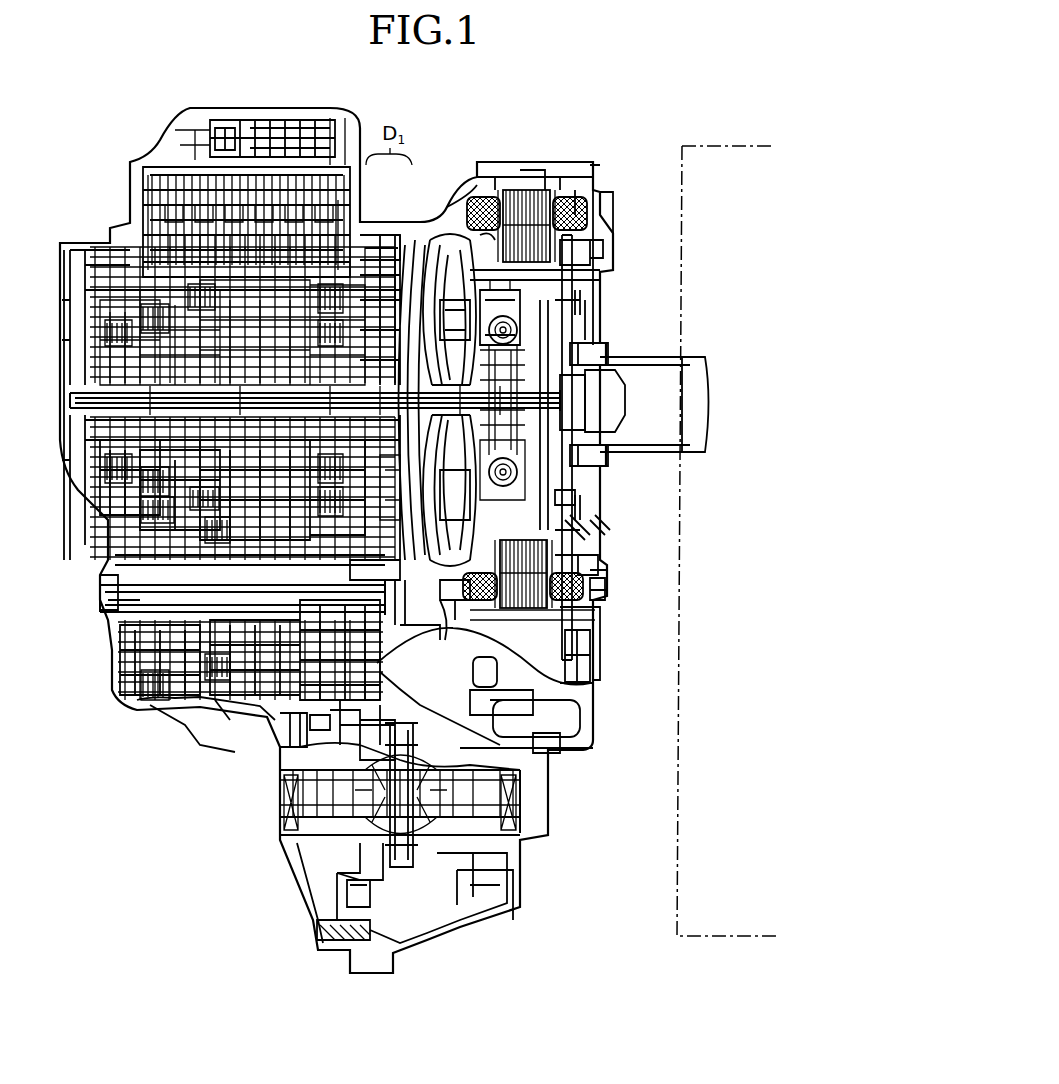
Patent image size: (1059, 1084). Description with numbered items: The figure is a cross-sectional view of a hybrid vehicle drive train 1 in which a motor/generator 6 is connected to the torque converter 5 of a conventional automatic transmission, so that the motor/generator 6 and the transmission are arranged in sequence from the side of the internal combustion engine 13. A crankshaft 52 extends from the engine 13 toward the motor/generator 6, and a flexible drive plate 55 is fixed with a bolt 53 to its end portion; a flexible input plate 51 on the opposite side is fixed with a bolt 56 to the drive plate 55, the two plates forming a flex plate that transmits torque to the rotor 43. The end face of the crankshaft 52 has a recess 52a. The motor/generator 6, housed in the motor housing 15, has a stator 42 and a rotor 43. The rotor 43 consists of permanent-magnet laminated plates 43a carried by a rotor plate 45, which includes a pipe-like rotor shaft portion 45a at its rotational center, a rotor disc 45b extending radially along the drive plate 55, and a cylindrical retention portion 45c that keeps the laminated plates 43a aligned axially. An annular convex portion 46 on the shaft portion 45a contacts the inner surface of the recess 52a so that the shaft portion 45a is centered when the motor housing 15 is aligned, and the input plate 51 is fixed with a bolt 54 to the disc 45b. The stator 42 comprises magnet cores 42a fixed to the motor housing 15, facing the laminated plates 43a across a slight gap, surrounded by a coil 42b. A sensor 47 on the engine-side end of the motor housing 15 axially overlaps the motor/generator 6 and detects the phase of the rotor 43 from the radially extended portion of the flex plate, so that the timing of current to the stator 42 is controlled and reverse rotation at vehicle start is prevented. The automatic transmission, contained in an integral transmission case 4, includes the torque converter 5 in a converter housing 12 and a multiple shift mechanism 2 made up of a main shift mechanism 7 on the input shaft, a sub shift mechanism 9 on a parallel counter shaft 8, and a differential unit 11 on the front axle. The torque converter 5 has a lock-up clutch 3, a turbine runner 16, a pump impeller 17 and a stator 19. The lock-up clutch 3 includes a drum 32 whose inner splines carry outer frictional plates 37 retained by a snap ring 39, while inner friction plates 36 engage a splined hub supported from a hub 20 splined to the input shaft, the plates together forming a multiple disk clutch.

The hybrid vehicle drive train 1 is at (167, 877).
The multiple shift mechanism 2 is at (365, 225).
The lock-up clutch 3 is at (491, 500).
The transmission case 4 is at (167, 718).
The torque converter 5 is at (423, 215).
The motor/generator 6 is at (537, 192).
The main shift mechanism 7 is at (80, 502).
The counter shaft 8 is at (115, 615).
The sub shift mechanism 9 is at (104, 695).
The differential unit 11 is at (279, 877).
The converter housing 12 is at (488, 165).
The internal combustion engine 13 is at (676, 917).
The motor housing 15 is at (580, 163).
The turbine runner 16 is at (480, 612).
The pump impeller 17 is at (440, 602).
The stator 19 is at (402, 508).
The hub 20 is at (482, 402).
The drum 32 is at (482, 524).
The inner friction plates 36 is at (437, 300).
The outer frictional plates 37 is at (492, 287).
The snap ring 39 is at (482, 283).
The stator 42 is at (583, 600).
The magnet cores 42a is at (490, 605).
The coil 42b is at (482, 612).
The rotor 43 is at (576, 259).
The laminated plates 43a is at (468, 197).
The rotor plate 45 is at (569, 311).
The rotor shaft portion 45a is at (612, 410).
The rotor disc 45b is at (560, 497).
The retention portion 45c is at (598, 563).
The annular convex portion 46 is at (596, 428).
The sensor 47 is at (613, 644).
The flexible input plate 51 is at (568, 528).
The crankshaft 52 is at (704, 459).
The recess 52a is at (595, 423).
The bolt 53 is at (606, 352).
The bolt 54 is at (567, 303).
The flexible drive plate 55 is at (612, 530).
The bolt 56 is at (600, 587).